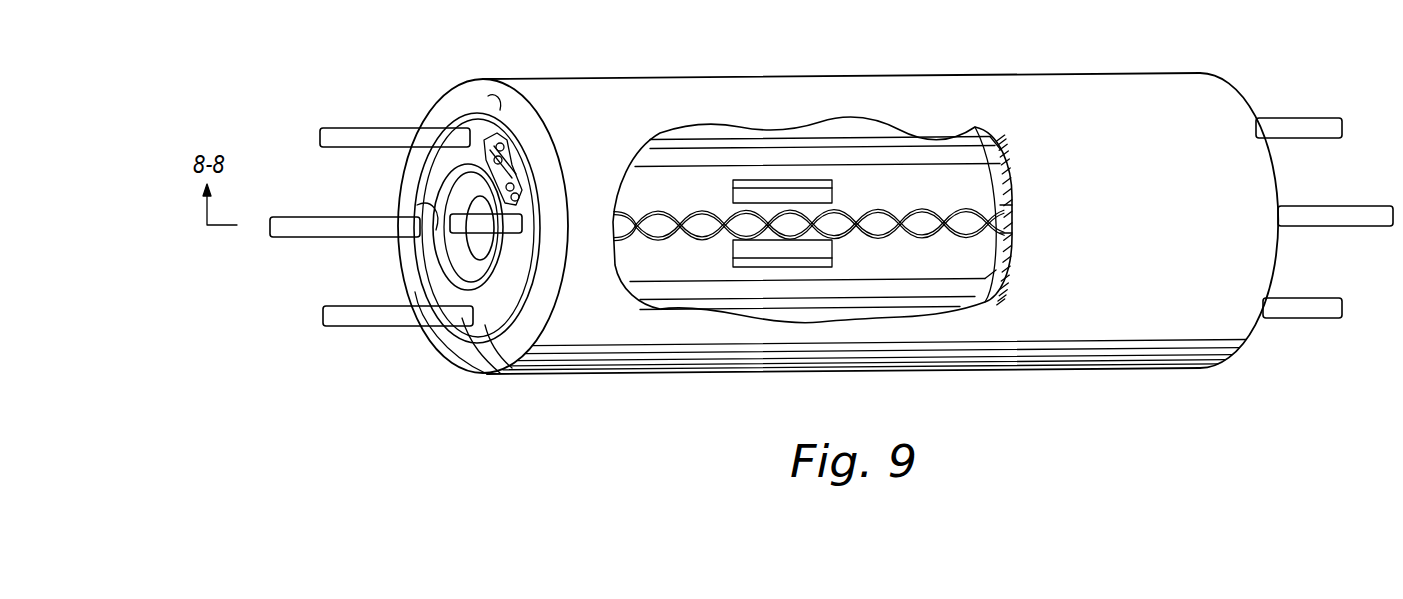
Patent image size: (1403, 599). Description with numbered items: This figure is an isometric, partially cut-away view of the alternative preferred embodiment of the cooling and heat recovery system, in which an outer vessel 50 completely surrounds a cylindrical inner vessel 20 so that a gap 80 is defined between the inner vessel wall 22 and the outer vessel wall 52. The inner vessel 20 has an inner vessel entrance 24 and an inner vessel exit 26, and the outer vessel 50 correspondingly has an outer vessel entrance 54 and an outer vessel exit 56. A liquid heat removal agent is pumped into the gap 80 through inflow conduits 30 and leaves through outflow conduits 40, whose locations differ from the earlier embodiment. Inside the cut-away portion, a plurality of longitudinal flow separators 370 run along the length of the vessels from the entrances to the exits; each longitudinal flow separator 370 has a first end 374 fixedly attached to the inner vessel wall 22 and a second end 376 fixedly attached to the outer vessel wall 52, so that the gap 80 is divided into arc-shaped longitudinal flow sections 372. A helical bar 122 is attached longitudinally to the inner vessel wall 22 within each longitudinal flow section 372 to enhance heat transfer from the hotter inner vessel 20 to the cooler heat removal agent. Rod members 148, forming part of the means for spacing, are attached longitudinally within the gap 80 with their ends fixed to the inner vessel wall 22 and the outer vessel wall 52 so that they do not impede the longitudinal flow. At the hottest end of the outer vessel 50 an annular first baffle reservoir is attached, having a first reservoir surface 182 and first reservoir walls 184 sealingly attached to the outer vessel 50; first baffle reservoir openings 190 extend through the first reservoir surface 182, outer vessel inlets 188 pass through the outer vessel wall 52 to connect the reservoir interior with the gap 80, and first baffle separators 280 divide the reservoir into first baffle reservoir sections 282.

The inner vessel 20 is at (1000, 211).
The inner vessel wall 22 is at (1000, 237).
The inner vessel entrance 24 is at (406, 84).
The inner vessel exit 26 is at (1268, 75).
The inflow conduit 30 is at (357, 130).
The outflow conduit 40 is at (1307, 118).
The outer vessel 50 is at (1078, 75).
The outer vessel wall 52 is at (1005, 152).
The outer vessel entrance 54 is at (418, 386).
The outer vessel exit 56 is at (1266, 364).
The gap 80 is at (722, 176).
The helical bar 122 is at (676, 224).
The rod member 148 is at (818, 180).
The first reservoir surface 182 is at (515, 280).
The first reservoir walls 184 is at (525, 307).
The outer vessel inlet 188 is at (505, 150).
The first baffle reservoir opening 190 is at (497, 103).
The first baffle separator 280 is at (510, 172).
The first baffle reservoir section 282 is at (496, 130).
The longitudinal flow separator 370 is at (963, 150).
The longitudinal flow section 372 is at (865, 127).
The longitudinal flow separator first end 374 is at (1005, 183).
The longitudinal flow separator second end 376 is at (917, 143).